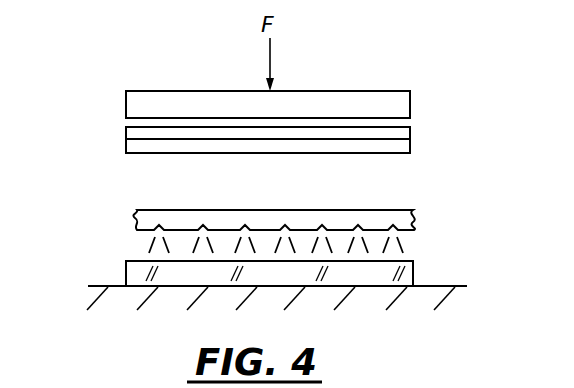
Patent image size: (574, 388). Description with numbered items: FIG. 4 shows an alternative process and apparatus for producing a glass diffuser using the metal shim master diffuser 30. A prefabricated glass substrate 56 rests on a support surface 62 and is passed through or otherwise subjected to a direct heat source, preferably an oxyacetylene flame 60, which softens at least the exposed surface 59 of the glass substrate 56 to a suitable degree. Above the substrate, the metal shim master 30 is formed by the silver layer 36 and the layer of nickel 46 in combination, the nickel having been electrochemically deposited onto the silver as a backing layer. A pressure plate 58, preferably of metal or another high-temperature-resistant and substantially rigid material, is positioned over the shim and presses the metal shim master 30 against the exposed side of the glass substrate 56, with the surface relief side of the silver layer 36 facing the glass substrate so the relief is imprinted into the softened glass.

The pressure plate 58 is at (172, 97).
The metal shim master diffuser 30 is at (428, 140).
The layer of nickel 46 is at (130, 133).
The silver layer 36 is at (128, 145).
The exposed surface 59 is at (407, 258).
The oxyacetylene flame 60 is at (153, 250).
The glass substrate 56 is at (413, 270).
The support surface 62 is at (450, 287).